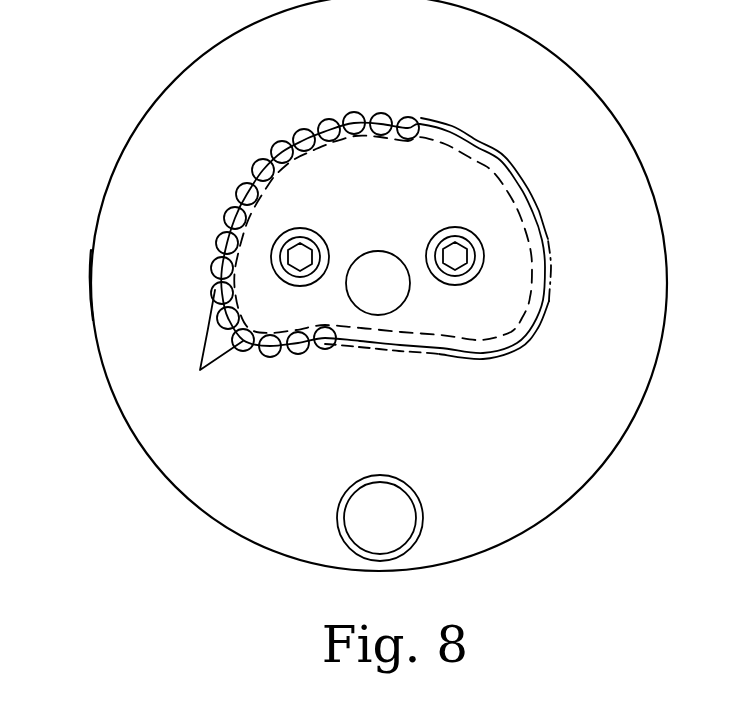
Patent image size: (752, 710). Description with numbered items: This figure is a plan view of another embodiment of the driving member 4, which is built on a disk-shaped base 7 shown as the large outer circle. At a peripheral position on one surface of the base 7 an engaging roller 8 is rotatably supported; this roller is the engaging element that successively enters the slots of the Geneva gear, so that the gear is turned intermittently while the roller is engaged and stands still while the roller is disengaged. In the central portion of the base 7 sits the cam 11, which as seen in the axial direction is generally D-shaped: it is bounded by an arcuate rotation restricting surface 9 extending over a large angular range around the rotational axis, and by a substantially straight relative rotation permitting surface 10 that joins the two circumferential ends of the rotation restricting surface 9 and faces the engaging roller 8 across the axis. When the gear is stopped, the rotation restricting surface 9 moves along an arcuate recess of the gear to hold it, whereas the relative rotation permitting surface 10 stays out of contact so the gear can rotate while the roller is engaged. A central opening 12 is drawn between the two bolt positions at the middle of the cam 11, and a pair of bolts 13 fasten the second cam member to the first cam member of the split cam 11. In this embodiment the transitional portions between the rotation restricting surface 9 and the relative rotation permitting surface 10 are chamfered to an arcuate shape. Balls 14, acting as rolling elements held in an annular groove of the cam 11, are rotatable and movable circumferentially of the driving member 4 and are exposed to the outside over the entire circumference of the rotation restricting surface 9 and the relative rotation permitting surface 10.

The driving member 4 is at (148, 108).
The base 7 is at (110, 261).
The engaging roller 8 is at (423, 516).
The rotation restricting surface 9 is at (460, 137).
The relative rotation permitting surface 10 is at (441, 348).
The cam 11 is at (537, 211).
The center hole 12 is at (378, 252).
The bolts 13 is at (304, 230).
The balls 14 is at (293, 262).